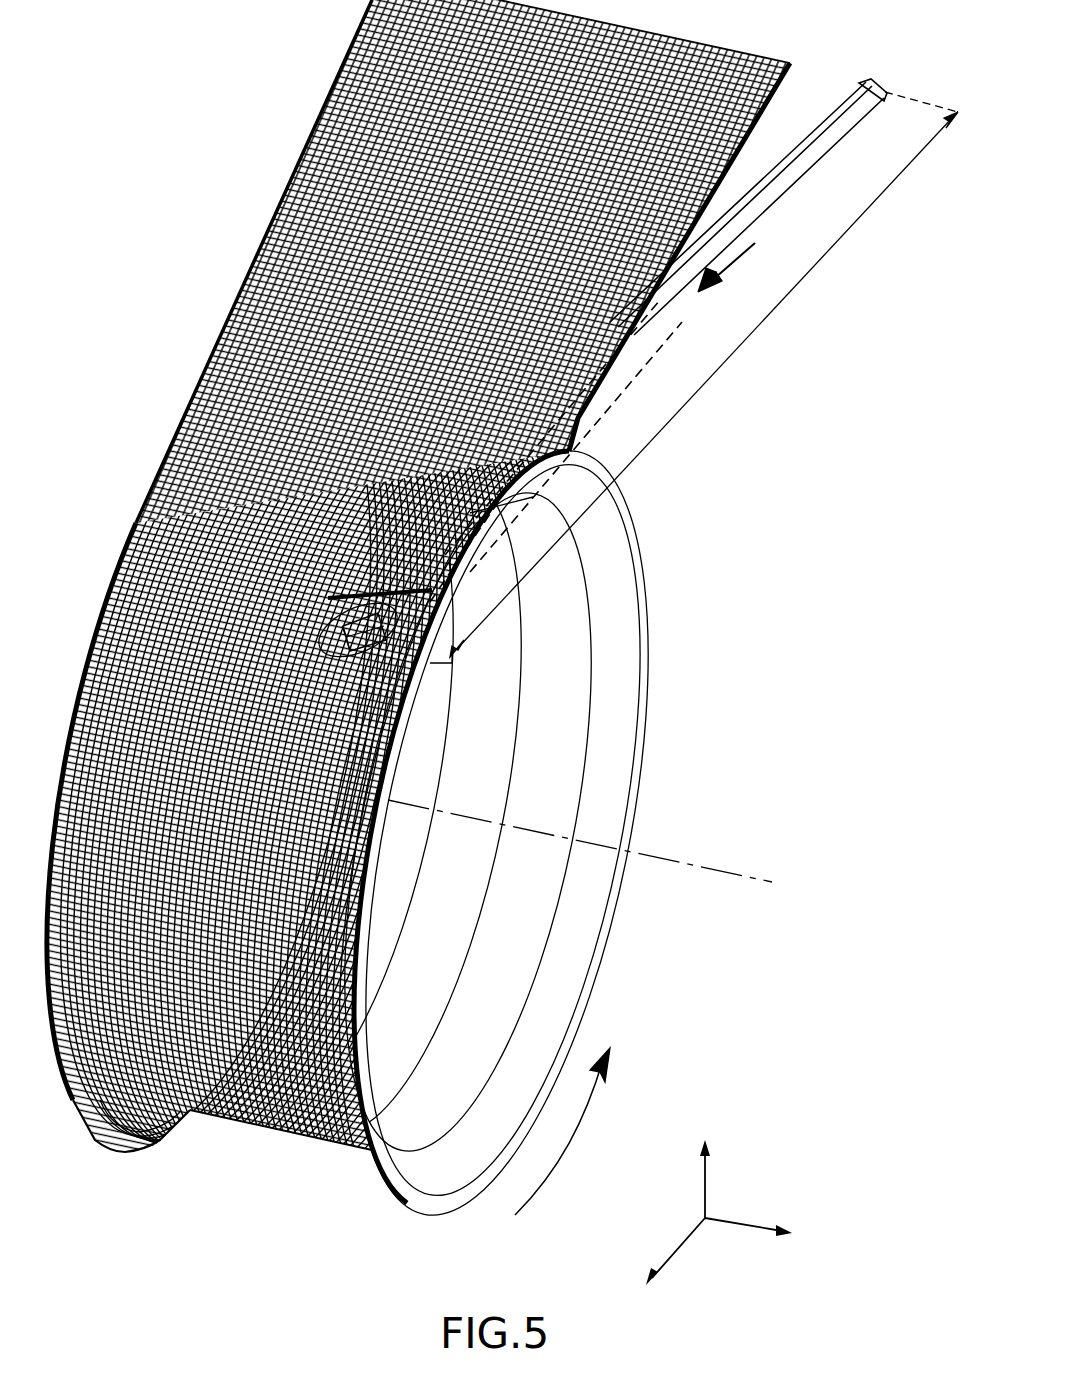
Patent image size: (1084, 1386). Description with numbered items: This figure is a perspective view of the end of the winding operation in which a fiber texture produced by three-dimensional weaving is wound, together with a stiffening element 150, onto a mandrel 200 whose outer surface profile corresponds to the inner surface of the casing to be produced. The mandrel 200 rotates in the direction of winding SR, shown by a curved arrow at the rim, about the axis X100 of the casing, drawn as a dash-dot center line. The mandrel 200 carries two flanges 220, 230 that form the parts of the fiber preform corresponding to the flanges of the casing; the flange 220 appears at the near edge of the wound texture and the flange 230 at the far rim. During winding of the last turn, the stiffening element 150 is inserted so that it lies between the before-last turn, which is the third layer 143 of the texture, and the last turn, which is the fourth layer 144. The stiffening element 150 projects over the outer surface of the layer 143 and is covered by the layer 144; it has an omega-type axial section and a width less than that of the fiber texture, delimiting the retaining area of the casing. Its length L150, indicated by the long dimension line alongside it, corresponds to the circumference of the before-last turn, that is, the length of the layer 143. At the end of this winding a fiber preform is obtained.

The layer 144 is at (318, 176).
The stiffening element 150 is at (846, 112).
The layer 143 is at (410, 670).
The mandrel 200 is at (238, 1212).
The flange 220 is at (98, 1150).
The flange 230 is at (448, 1200).
The length of the stiffening element L150 is at (684, 370).
The drum axis X100 is at (609, 849).
The direction of winding SR is at (566, 1150).